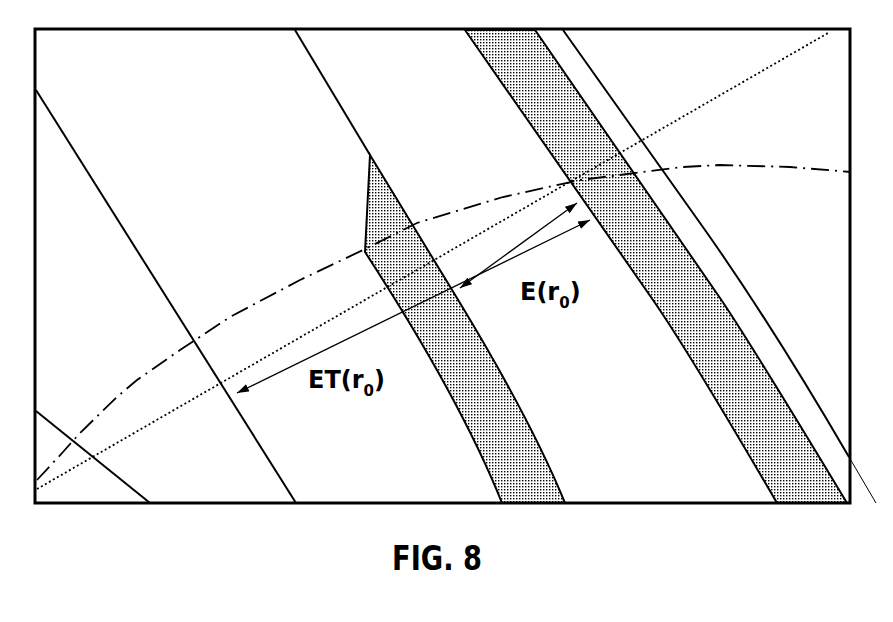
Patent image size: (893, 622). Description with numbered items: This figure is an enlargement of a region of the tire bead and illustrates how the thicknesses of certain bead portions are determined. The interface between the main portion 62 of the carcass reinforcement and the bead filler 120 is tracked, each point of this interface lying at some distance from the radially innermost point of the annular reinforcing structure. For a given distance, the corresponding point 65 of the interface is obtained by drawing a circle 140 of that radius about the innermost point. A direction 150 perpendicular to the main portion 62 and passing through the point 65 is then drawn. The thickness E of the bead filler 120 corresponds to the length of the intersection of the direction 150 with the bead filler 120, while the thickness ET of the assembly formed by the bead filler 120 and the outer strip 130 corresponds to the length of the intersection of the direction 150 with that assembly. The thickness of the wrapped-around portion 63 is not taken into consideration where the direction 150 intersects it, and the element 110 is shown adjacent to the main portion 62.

The main portion 62 is at (702, 320).
The wrapped-around portion 63 is at (488, 398).
The point of the interface 65 is at (568, 180).
The outer surface 110 is at (575, 70).
The bead filler 120 is at (647, 403).
The outer strip 130 is at (248, 180).
The circle 140 is at (133, 380).
The direction 150 is at (757, 73).